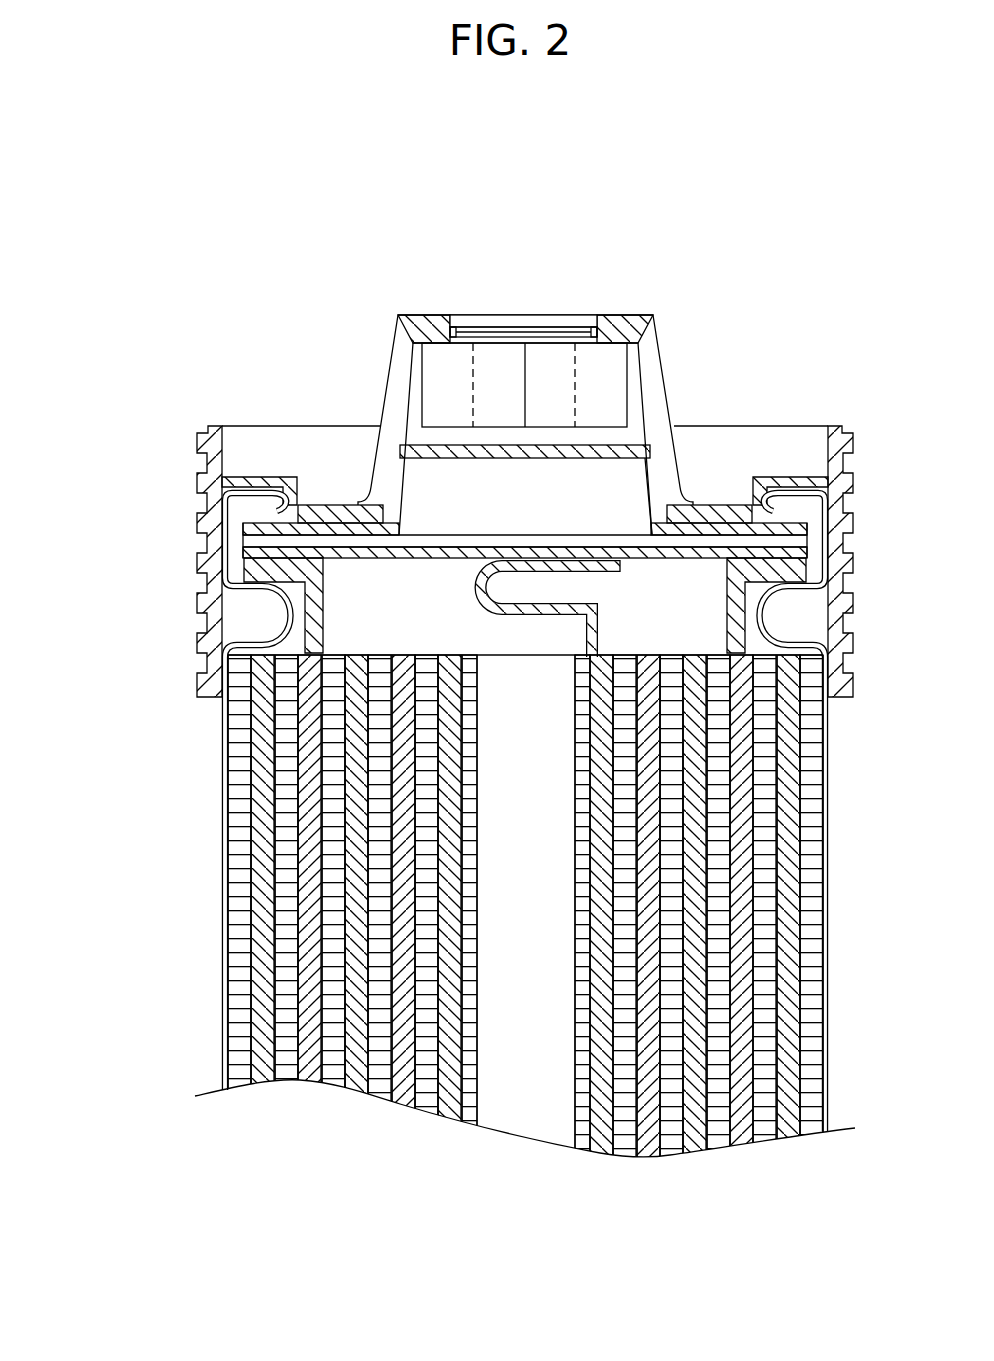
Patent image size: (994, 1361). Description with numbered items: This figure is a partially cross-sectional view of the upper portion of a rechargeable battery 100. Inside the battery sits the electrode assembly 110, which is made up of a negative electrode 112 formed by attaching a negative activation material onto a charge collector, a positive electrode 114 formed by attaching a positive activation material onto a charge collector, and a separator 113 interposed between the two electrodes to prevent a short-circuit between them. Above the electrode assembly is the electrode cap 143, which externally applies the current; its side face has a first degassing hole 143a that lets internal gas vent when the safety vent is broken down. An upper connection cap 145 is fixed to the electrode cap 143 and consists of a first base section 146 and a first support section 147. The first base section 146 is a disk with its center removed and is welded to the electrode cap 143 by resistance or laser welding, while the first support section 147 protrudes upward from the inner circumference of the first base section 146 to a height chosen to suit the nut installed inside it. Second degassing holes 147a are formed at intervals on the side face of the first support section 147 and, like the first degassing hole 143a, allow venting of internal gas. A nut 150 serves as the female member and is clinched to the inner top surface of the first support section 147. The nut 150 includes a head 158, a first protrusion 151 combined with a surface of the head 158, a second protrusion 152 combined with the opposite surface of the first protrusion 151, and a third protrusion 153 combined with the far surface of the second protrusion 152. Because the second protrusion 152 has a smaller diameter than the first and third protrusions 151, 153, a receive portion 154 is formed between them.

The rechargeable battery 100 is at (488, 128).
The electrode assembly 110 is at (827, 1283).
The negative electrode 112 is at (743, 1135).
The separator 113 is at (767, 1132).
The positive electrode 114 is at (790, 1128).
The electrode cap 143 is at (657, 443).
The first degassing hole 143a is at (682, 487).
The upper connection cap 145 is at (100, 373).
The first base section 146 is at (303, 518).
The first support section 147 is at (405, 330).
The second degassing holes 147a is at (749, 429).
The nut 150 is at (494, 300).
The first protrusion 151 is at (640, 335).
The second protrusion 152 is at (455, 330).
The third protrusion 153 is at (558, 320).
The receive portion 154 is at (604, 330).
The head 158 is at (615, 370).